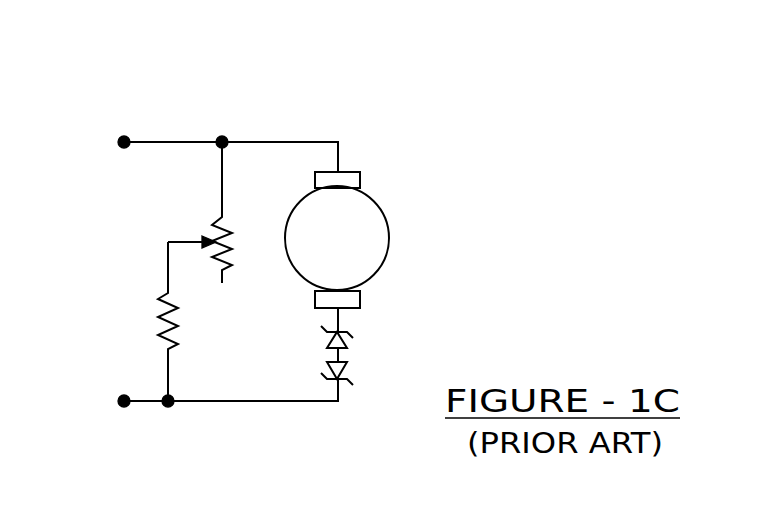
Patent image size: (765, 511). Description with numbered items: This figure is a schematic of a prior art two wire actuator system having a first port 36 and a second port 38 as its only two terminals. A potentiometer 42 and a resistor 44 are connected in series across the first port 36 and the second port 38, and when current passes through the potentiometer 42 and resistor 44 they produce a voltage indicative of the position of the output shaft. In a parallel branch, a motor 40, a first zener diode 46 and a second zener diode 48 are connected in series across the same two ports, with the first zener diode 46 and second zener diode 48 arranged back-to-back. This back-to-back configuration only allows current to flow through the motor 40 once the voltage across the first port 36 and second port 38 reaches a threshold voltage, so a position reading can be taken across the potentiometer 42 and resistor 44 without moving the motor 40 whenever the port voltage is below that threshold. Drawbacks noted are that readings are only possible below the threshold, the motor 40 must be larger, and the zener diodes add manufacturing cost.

The first port 36 is at (120, 138).
The second port 38 is at (120, 407).
The motor 40 is at (362, 217).
The potentiometer 42 is at (200, 222).
The resistor 44 is at (158, 320).
The first zener diode 46 is at (352, 336).
The second zener diode 48 is at (350, 383).